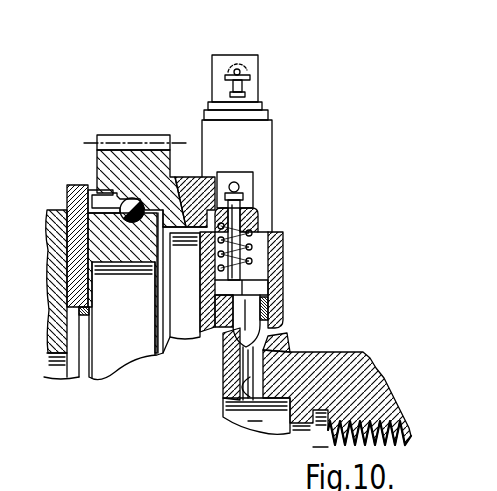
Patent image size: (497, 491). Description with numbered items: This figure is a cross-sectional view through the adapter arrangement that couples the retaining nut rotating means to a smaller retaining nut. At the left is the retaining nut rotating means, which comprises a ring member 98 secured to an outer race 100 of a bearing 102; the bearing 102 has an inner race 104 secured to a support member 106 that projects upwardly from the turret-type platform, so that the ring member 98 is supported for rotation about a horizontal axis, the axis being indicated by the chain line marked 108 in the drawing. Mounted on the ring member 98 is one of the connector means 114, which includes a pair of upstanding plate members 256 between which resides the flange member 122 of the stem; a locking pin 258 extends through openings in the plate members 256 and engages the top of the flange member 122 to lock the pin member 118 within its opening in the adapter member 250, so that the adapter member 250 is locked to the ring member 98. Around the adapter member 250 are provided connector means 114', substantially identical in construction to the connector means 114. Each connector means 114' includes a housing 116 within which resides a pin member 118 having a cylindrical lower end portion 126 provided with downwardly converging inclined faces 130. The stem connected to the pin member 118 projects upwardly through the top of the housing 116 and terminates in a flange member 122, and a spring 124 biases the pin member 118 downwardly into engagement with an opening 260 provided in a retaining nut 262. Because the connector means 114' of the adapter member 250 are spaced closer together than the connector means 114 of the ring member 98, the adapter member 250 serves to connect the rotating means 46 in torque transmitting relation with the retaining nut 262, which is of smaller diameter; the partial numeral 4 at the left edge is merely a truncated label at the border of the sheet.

The ring member 98 is at (206, 177).
The outer race 100 is at (100, 163).
The bearing 102 is at (115, 205).
The inner race 104 is at (150, 284).
The support member 106 is at (50, 280).
The axis 108 is at (141, 135).
The connector means 114 is at (277, 176).
The connector means 114' is at (330, 274).
The housing 116 is at (284, 300).
The pin member 118 is at (258, 321).
The flange member 122 is at (250, 75).
The spring 124 is at (252, 263).
The cylindrical lower end portion 126 is at (240, 350).
The inclined faces 130 is at (222, 345).
The adapter member 250 is at (302, 234).
The plate members 256 is at (260, 66).
The locking pin 258 is at (242, 66).
The opening 260 is at (240, 380).
The retaining nut 262 is at (363, 360).
The conduit 4 is at (4, 164).
The rotating means 46 is at (181, 485).